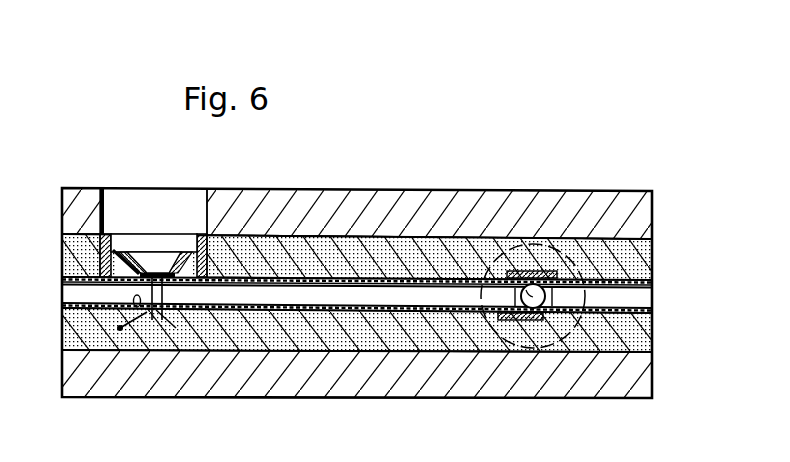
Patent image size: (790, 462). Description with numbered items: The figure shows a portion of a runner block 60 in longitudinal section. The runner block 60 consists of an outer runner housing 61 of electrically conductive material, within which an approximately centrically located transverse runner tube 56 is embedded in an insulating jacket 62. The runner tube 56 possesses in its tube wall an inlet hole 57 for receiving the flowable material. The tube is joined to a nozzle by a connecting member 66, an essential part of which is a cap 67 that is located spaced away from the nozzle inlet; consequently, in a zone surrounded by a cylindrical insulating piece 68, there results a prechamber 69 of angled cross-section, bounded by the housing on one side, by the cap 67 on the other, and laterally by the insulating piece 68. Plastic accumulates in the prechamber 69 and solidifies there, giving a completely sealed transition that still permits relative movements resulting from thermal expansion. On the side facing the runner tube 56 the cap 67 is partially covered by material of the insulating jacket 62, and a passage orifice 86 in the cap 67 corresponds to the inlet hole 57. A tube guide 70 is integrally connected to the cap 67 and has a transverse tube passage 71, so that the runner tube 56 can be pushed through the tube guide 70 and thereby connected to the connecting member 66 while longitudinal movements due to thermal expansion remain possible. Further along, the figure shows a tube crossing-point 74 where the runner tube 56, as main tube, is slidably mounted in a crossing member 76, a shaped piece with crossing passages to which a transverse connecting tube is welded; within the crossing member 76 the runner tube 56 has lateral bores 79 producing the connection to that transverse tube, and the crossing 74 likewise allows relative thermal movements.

The transverse runner tube 56 is at (288, 278).
The inlet hole 57 is at (152, 318).
The runner block 60 is at (388, 186).
The outer runner housing 61 is at (424, 225).
The insulating jacket 62 is at (291, 340).
The connecting member 66 is at (119, 330).
The cap 67 is at (131, 256).
The insulating piece 68 is at (106, 234).
The prechamber 69 is at (167, 238).
The tube guide 70 is at (170, 318).
The transverse tube passage 71 is at (137, 307).
The tube crossing-point 74 is at (512, 262).
The crossing member 76 is at (548, 275).
The lateral bores 79 is at (541, 284).
The passage orifice 86 is at (160, 318).